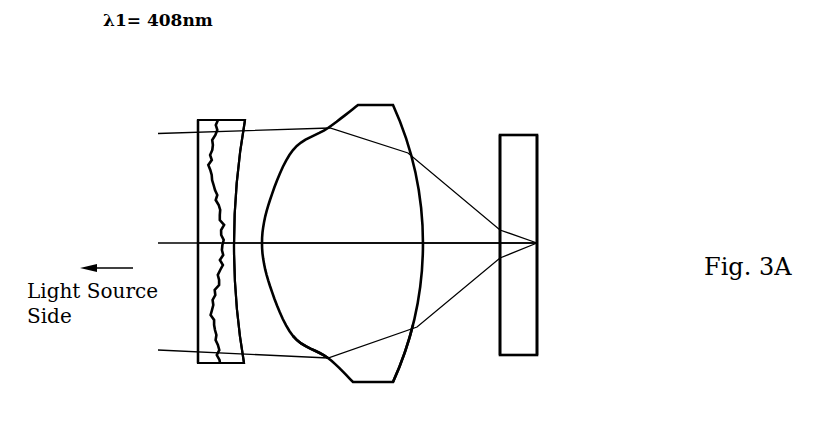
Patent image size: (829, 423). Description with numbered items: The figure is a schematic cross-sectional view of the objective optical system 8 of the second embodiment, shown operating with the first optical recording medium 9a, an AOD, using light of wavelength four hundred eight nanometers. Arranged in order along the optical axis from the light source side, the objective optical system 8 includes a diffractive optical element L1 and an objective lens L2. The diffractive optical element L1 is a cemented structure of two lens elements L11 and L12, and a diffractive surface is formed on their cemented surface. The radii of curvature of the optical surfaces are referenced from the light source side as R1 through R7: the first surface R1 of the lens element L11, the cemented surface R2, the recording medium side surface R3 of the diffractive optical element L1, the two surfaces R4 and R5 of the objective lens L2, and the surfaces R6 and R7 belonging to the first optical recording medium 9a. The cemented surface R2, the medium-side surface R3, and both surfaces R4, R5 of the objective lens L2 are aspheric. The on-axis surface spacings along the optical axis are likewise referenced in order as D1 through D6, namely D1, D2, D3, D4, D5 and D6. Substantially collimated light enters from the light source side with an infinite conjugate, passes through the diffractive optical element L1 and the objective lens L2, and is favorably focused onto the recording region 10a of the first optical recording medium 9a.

The objective optical system 8 is at (339, 78).
The first optical recording medium 9a is at (521, 116).
The recording region 10a is at (538, 172).
The diffractive optical element L1 is at (225, 88).
The lens element L11 is at (210, 120).
The lens element L12 is at (233, 120).
The objective lens L2 is at (391, 105).
The radius of curvature of the first surface R1 is at (198, 347).
The radius of curvature of the cemented surface R2 is at (213, 348).
The radius of curvature of the third surface R3 is at (247, 350).
The radius of curvature of the fourth surface R4 is at (312, 348).
The radius of curvature of the fifth surface R5 is at (415, 325).
The radius of curvature of the sixth surface R6 is at (498, 338).
The radius of curvature of the seventh surface R7 is at (536, 338).
The on-axis surface spacing D1 is at (201, 243).
The on-axis surface spacing D2 is at (229, 236).
The on-axis surface spacing D3 is at (247, 243).
The on-axis surface spacing D4 is at (318, 243).
The on-axis surface spacing D5 is at (432, 243).
The on-axis surface spacing D6 is at (514, 243).